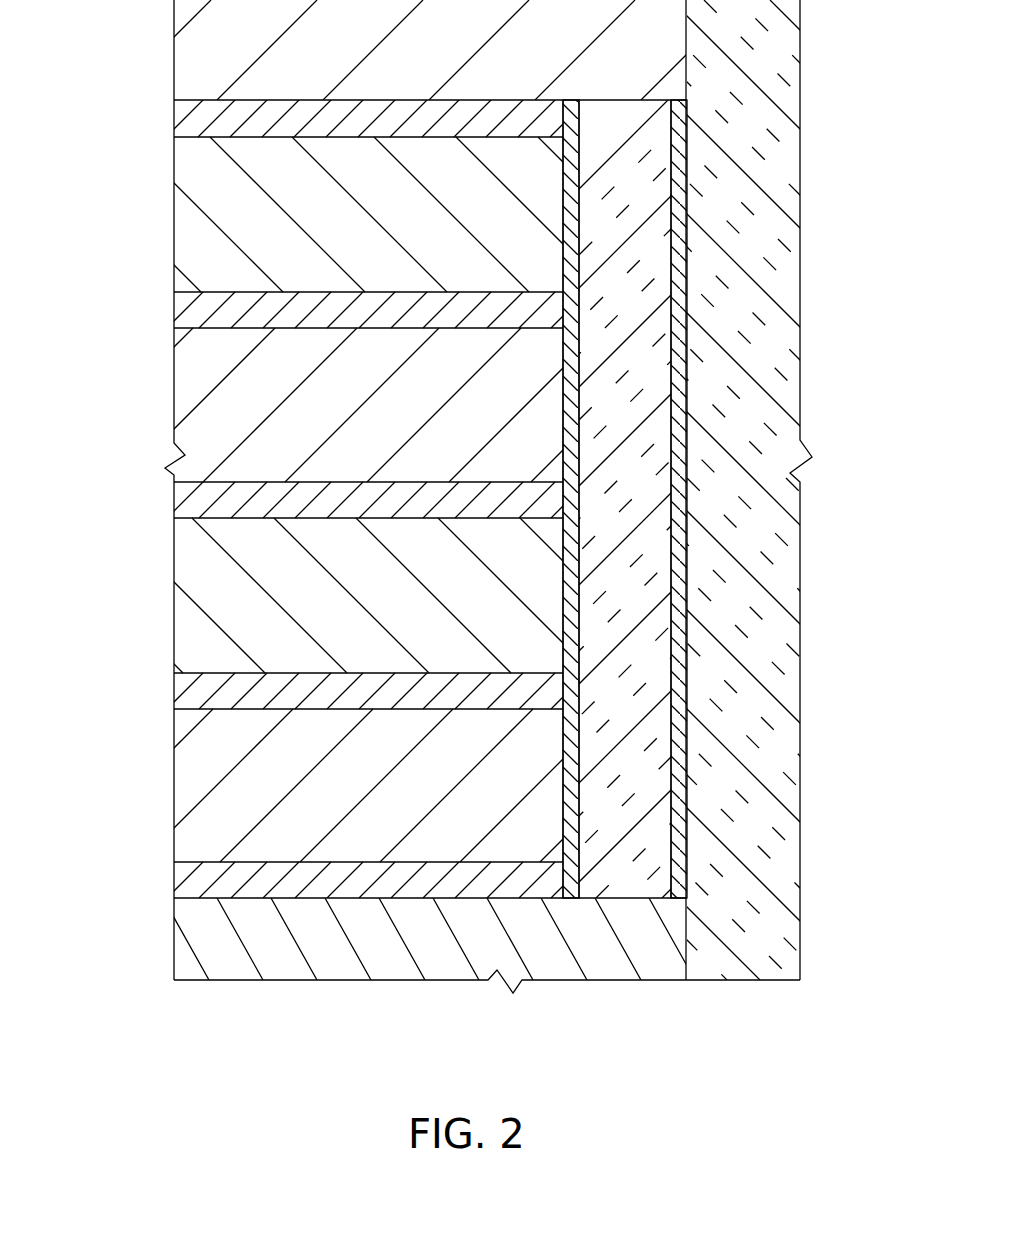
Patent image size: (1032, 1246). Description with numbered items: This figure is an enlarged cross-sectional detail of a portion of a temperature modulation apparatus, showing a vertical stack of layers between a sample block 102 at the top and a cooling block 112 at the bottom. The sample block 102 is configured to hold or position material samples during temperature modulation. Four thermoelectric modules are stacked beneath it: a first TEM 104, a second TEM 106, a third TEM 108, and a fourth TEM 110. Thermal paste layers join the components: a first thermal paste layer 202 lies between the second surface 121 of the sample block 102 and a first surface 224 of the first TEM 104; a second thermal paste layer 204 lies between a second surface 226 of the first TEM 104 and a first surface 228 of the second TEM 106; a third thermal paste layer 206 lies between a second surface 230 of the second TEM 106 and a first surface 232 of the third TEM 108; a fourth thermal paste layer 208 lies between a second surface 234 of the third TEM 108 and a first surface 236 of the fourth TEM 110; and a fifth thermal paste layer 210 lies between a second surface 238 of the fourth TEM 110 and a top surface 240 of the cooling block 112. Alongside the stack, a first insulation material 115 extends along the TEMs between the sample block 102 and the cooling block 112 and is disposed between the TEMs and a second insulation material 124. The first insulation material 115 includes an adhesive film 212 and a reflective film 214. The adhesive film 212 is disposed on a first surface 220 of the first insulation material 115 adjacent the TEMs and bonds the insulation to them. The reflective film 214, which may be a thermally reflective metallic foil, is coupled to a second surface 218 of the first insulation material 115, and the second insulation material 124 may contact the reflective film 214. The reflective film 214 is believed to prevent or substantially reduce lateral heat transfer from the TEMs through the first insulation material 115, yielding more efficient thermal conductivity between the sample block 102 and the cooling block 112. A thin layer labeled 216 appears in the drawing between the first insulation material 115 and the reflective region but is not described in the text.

The sample block 102 is at (207, 38).
The first thermoelectric module 104 is at (203, 243).
The second thermoelectric module 106 is at (205, 374).
The third thermoelectric module 108 is at (205, 568).
The fourth thermoelectric module 110 is at (205, 778).
The cooling block 112 is at (608, 967).
The first insulation material 115 is at (647, 787).
The second surface of the sample block 121 is at (407, 98).
The second insulation material 124 is at (780, 862).
The first thermal paste layer 202 is at (205, 122).
The second thermal paste layer 204 is at (205, 314).
The third thermal paste layer 206 is at (207, 500).
The fourth thermal paste layer 208 is at (205, 688).
The fifth thermal paste layer 210 is at (212, 875).
The adhesive film 212 is at (572, 408).
The reflective film 214 is at (688, 338).
The outer liner 216 is at (692, 554).
The second surface of the first insulation material 218 is at (662, 590).
The first surface of the first insulation material 220 is at (584, 259).
The first surface of the first TEM 224 is at (380, 140).
The second surface of the first TEM 226 is at (374, 290).
The first surface of the second TEM 228 is at (415, 330).
The second surface of the second TEM 230 is at (332, 480).
The first surface of the third TEM 232 is at (408, 520).
The second surface of the third TEM 234 is at (433, 671).
The first surface of the fourth TEM 236 is at (428, 711).
The second surface of the fourth TEM 238 is at (355, 860).
The top surface of the cooling block 240 is at (318, 900).